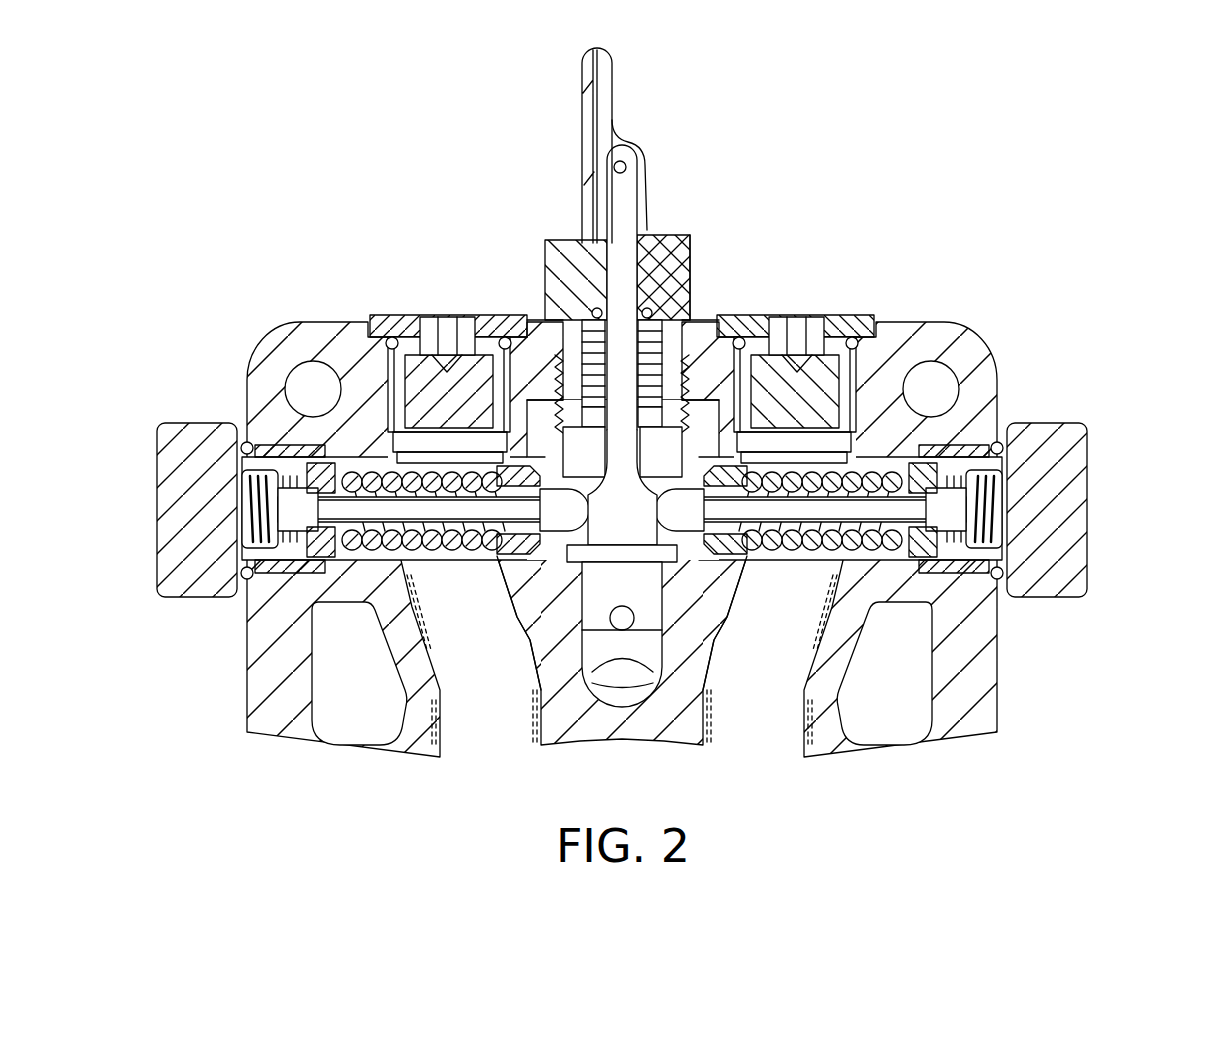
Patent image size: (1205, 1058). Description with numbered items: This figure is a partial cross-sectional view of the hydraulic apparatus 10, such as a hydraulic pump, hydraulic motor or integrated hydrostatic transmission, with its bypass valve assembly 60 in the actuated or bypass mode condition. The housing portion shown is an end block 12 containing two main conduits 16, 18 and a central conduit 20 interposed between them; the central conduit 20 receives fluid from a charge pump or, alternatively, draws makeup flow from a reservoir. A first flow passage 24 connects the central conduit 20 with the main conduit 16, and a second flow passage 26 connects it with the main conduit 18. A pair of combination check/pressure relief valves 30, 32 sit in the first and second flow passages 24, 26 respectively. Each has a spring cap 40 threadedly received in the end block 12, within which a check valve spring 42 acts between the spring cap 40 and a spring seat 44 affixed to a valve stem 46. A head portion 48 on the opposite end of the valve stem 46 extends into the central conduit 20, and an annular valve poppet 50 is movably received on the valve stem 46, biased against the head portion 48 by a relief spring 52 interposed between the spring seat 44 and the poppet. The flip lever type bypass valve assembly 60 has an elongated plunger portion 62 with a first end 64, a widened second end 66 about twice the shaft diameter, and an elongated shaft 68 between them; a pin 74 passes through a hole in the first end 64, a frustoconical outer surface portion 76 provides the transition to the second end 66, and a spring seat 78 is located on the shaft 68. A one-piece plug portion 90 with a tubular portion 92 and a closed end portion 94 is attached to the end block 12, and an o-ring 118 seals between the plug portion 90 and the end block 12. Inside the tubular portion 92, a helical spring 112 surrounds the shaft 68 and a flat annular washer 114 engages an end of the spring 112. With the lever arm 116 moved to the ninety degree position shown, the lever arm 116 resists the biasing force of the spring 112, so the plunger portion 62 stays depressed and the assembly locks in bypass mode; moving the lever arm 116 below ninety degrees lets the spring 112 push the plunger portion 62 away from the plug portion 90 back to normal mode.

The hydraulic apparatus 10 is at (258, 158).
The end block 12 is at (1003, 727).
The main conduit 16 is at (487, 732).
The main conduit 18 is at (760, 735).
The central conduit 20 is at (622, 652).
The first flow passage 24 is at (530, 650).
The second flow passage 26 is at (713, 650).
The valve 30 is at (480, 562).
The valve 32 is at (812, 562).
The spring cap 40 is at (170, 504).
The check valve spring 42 is at (260, 538).
The spring seat 44 is at (262, 573).
The valve stem 46 is at (290, 483).
The head portion 48 is at (567, 547).
The annular valve poppet 50 is at (556, 475).
The relief spring 52 is at (378, 545).
The bypass valve assembly 60 is at (503, 236).
The plunger portion 62 is at (683, 282).
The first end 64 is at (622, 148).
The second end 66 is at (625, 527).
The shaft 68 is at (623, 295).
The pin 74 is at (628, 165).
The frustoconical outer surface portion 76 is at (650, 430).
The spring seat 78 is at (592, 420).
The plug portion 90 is at (538, 266).
The tubular portion 92 is at (540, 335).
The closed end portion 94 is at (700, 292).
The spring 112 is at (695, 322).
The washer 114 is at (697, 312).
The lever arm 116 is at (605, 72).
The o-ring 118 is at (545, 337).